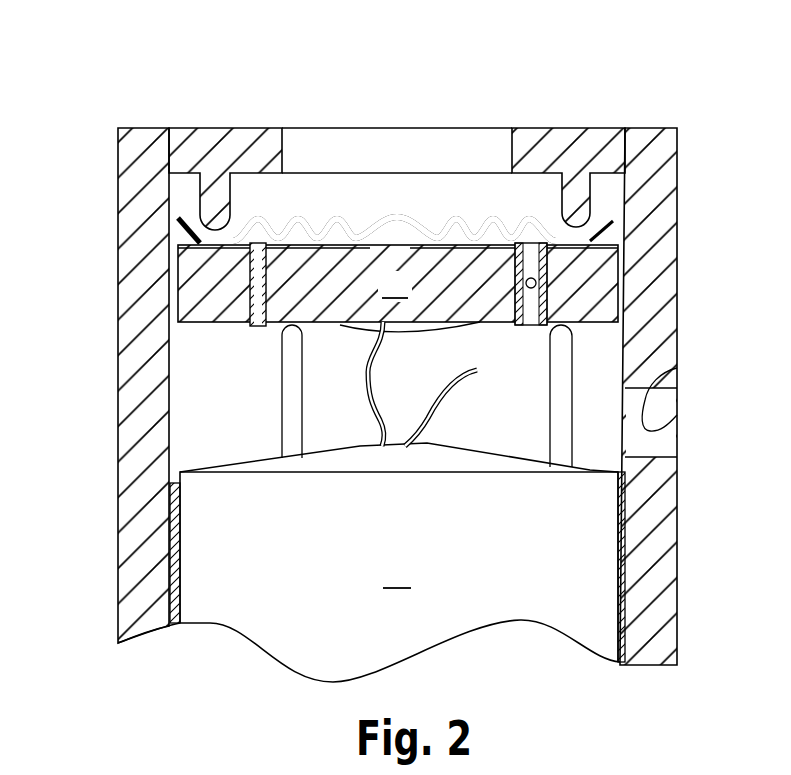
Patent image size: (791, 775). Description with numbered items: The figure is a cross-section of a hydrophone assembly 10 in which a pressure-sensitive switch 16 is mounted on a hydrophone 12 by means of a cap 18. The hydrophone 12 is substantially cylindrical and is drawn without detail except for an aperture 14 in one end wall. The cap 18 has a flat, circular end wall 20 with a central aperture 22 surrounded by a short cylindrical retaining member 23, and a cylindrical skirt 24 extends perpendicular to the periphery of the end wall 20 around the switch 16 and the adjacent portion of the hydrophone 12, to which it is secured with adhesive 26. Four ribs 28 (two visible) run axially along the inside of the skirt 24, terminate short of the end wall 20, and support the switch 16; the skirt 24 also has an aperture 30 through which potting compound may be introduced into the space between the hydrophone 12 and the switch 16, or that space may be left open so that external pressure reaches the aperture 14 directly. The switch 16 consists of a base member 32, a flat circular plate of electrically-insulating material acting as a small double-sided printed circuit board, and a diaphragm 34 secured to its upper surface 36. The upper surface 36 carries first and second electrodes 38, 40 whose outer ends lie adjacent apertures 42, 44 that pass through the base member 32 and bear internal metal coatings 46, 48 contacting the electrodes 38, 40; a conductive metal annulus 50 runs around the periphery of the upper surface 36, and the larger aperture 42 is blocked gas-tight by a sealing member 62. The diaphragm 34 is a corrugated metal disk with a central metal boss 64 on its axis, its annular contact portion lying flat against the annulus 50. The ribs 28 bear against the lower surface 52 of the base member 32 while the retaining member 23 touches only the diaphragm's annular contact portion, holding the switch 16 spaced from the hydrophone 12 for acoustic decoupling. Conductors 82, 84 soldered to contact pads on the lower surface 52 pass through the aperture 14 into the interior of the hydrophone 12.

The hydrophone assembly 10 is at (566, 82).
The hydrophone 12 is at (369, 577).
The aperture 14 is at (395, 448).
The pressure-sensitive switch 16 is at (632, 218).
The cap 18 is at (168, 106).
The end wall 20 is at (195, 152).
The central aperture 22 is at (300, 163).
The retaining member 23 is at (265, 192).
The cylindrical skirt 24 is at (172, 483).
The adhesive 26 is at (172, 563).
The ribs 28 is at (285, 400).
The aperture 30 is at (677, 420).
The base member 32 is at (398, 283).
The diaphragm 34 is at (610, 182).
The upper surface 36 is at (215, 248).
The first electrode 38 is at (465, 245).
The second electrode 40 is at (330, 245).
The aperture 42 is at (532, 315).
The aperture 44 is at (258, 275).
The internal metal coating 46 is at (550, 300).
The internal metal coating 48 is at (255, 305).
The conductive metal annulus 50 is at (608, 242).
The lower surface 52 is at (250, 322).
The sealing member 62 is at (545, 282).
The central metal boss 64 is at (395, 217).
The conductor 82 is at (375, 416).
The conductor 84 is at (433, 412).